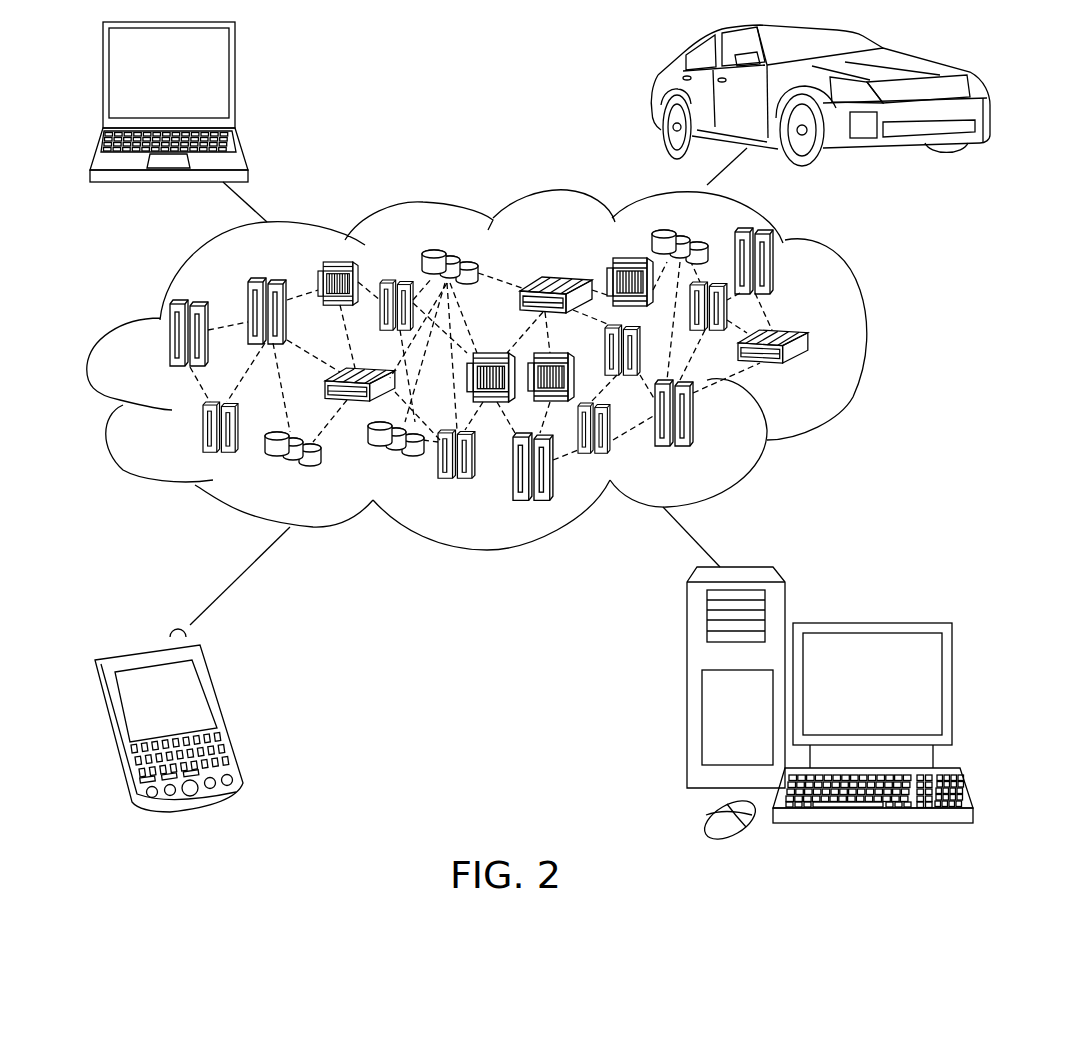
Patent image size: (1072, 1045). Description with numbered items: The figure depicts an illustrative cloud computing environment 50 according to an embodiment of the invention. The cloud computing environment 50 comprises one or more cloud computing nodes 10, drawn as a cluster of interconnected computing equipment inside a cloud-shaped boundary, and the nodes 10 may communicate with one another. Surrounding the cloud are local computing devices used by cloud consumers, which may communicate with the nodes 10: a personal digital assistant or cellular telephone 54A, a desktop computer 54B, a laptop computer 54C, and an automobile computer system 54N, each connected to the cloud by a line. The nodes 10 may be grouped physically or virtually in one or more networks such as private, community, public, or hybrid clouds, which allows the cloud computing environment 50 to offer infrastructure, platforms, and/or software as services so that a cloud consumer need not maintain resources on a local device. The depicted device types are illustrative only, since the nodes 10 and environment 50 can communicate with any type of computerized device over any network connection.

The cloud computing node 10 is at (819, 375).
The cloud computing environment 50 is at (869, 347).
The personal digital assistant or cellular telephone 54A is at (223, 712).
The desktop computer 54B is at (871, 623).
The laptop computer 54C is at (236, 80).
The automobile computer system 54N is at (660, 97).